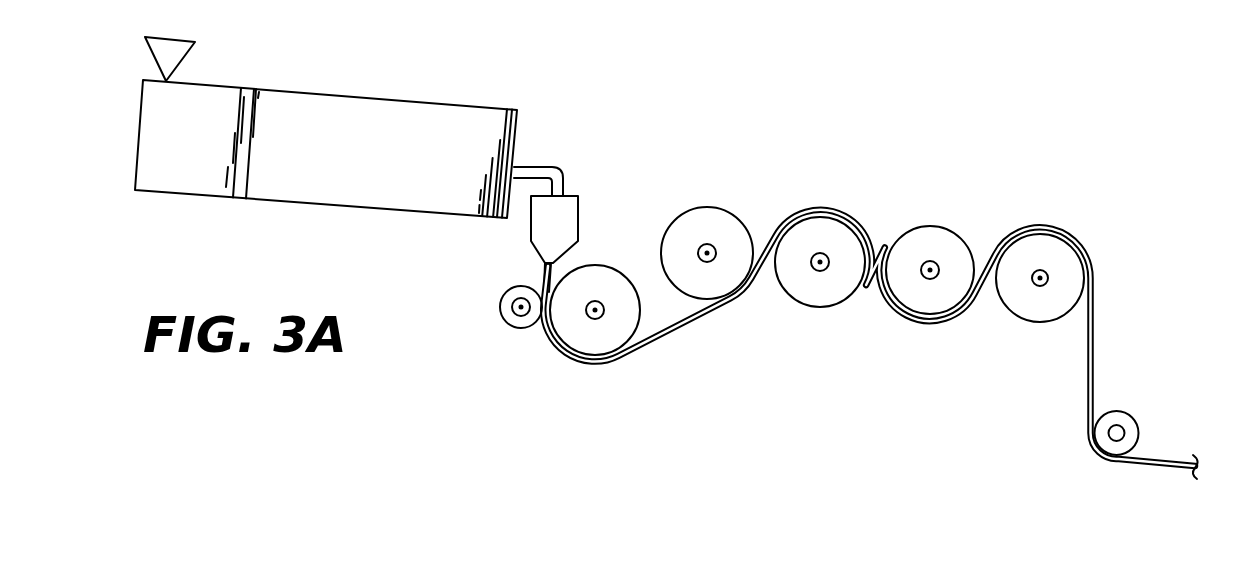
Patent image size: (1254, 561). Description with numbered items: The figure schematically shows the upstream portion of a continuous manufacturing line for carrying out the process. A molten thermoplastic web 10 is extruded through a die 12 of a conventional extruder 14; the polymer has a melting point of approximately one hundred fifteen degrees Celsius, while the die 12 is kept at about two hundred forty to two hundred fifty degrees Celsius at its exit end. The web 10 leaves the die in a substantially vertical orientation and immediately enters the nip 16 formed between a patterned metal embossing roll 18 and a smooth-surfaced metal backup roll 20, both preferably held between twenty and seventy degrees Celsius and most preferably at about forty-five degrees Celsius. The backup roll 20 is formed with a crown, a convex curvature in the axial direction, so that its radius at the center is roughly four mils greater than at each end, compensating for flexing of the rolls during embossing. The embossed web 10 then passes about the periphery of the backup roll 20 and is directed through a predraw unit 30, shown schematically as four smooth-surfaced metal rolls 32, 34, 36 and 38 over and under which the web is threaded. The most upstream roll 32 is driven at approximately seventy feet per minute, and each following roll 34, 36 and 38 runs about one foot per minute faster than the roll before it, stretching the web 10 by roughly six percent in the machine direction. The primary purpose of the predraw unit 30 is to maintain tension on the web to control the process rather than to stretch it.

The thermoplastic web 10 is at (675, 330).
The die 12 is at (567, 205).
The extruder 14 is at (450, 104).
The nip 16 is at (542, 325).
The embossing roll 18 is at (496, 303).
The backup roll 20 is at (645, 232).
The predraw unit 30 is at (900, 290).
The roll 32 is at (708, 212).
The roll 34 is at (847, 287).
The roll 36 is at (940, 232).
The roll 38 is at (1030, 300).